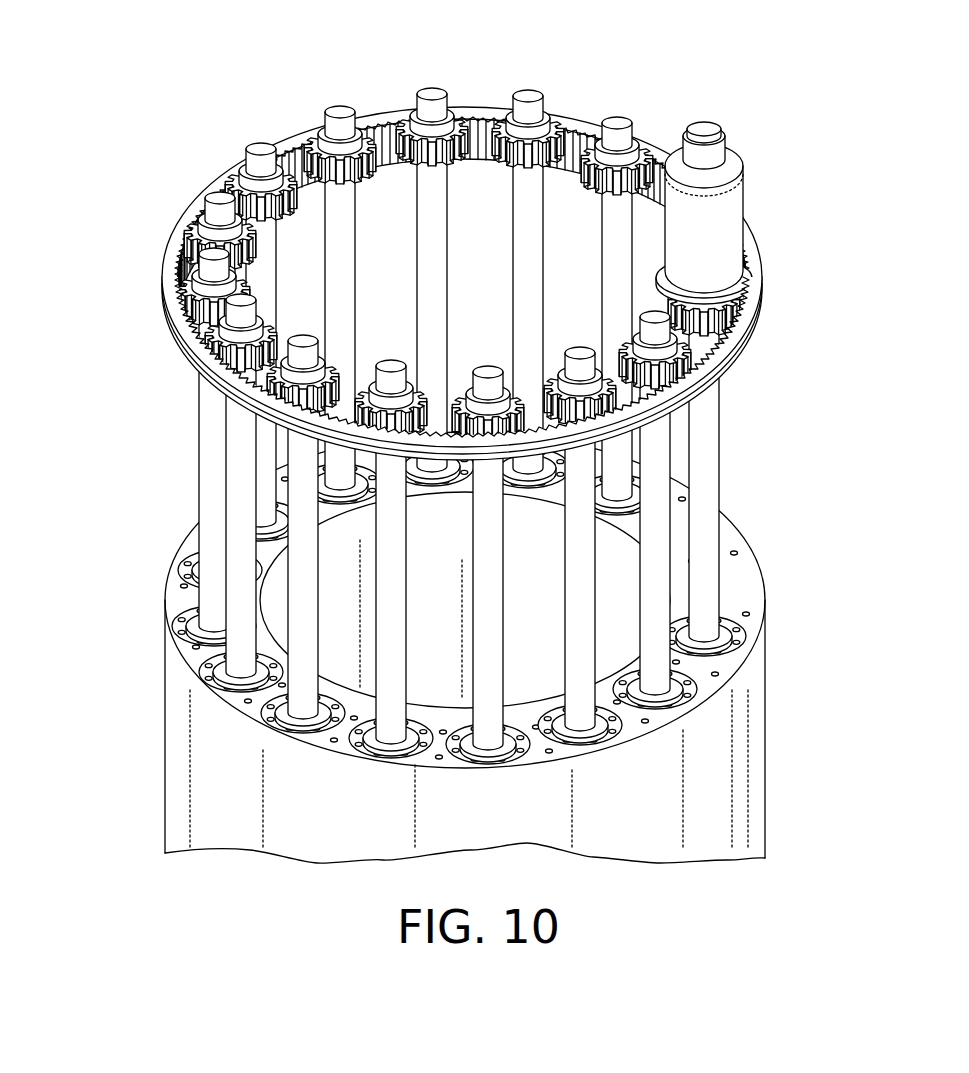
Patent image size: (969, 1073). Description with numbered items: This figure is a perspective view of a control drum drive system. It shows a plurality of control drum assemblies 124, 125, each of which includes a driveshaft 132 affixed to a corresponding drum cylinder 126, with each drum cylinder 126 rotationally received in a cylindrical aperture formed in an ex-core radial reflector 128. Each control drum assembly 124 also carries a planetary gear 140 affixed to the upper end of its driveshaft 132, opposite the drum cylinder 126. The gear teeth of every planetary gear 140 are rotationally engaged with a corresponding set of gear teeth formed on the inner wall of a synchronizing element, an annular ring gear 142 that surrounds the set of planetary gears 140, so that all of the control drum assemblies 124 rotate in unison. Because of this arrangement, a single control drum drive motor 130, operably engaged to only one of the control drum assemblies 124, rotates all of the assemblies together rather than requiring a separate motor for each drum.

The control drum assembly 124 is at (147, 430).
The control drum assembly 125 is at (750, 438).
The drum cylinder 126 is at (733, 640).
The ex-core radial reflector 128 is at (760, 753).
The control drum drive motor 130 is at (733, 202).
The driveshaft 132 is at (720, 495).
The planetary gear 140 is at (728, 338).
The annular ring gear 142 is at (479, 108).